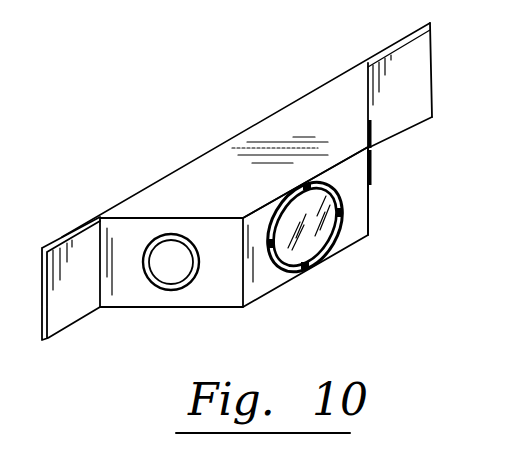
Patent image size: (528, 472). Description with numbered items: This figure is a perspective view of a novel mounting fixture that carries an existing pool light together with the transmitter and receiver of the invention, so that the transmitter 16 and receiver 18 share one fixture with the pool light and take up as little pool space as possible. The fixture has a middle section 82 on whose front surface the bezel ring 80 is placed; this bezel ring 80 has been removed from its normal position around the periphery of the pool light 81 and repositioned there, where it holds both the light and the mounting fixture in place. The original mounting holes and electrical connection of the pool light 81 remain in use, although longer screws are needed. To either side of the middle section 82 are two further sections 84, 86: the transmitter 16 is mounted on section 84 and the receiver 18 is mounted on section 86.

The transmitter 16 is at (180, 233).
The receiver 18 is at (372, 165).
The bezel ring 80 is at (308, 263).
The pool light 81 is at (338, 219).
The middle section 82 is at (268, 283).
The section 84 is at (78, 300).
The section 86 is at (409, 77).